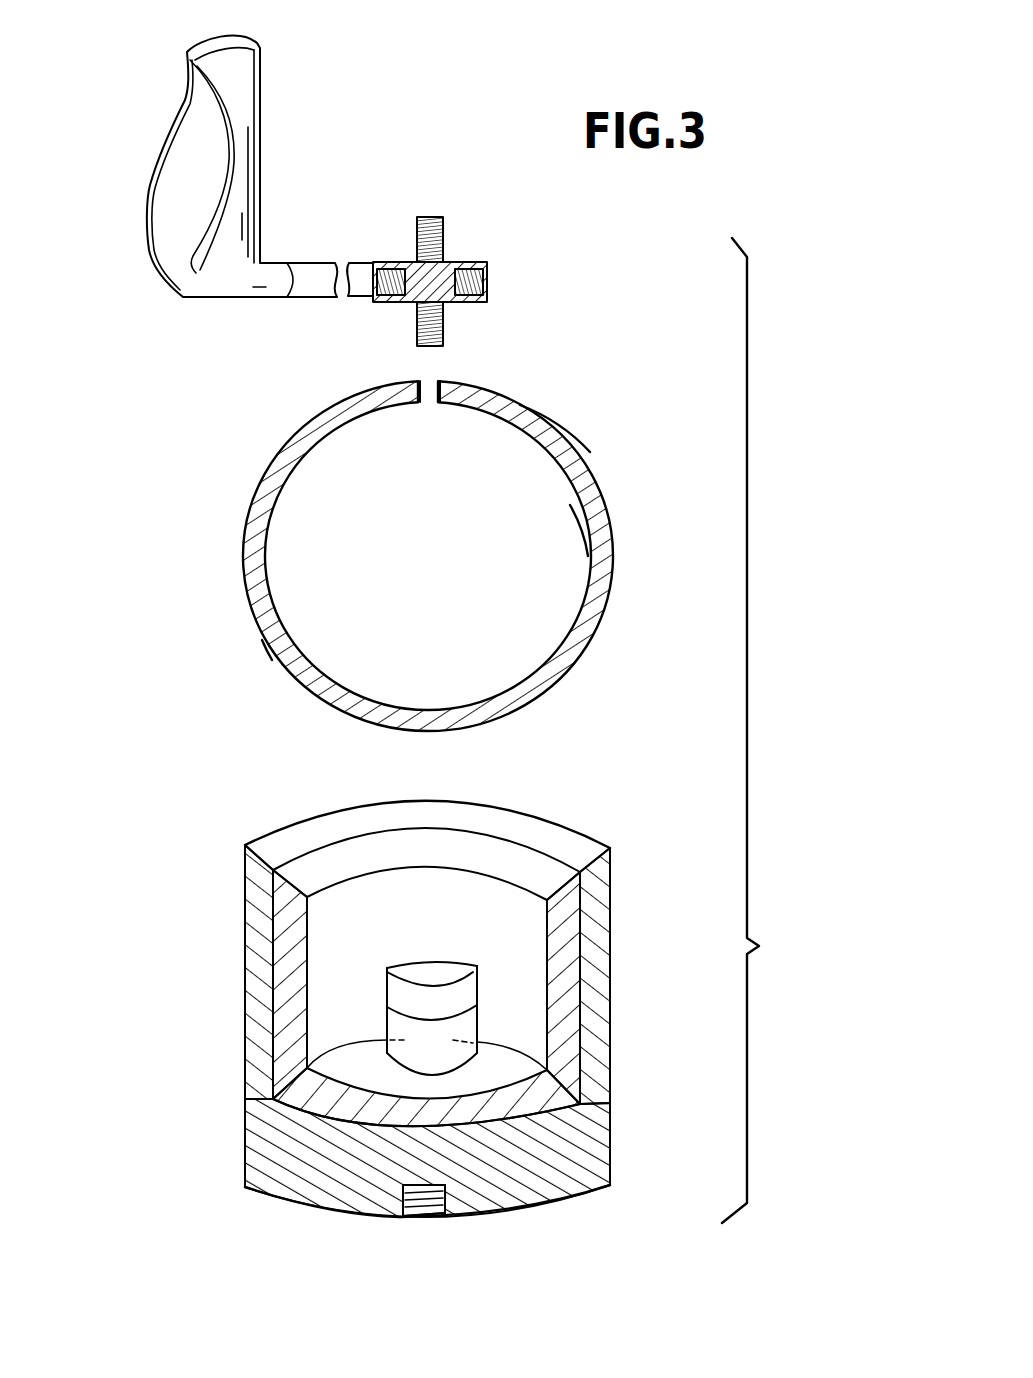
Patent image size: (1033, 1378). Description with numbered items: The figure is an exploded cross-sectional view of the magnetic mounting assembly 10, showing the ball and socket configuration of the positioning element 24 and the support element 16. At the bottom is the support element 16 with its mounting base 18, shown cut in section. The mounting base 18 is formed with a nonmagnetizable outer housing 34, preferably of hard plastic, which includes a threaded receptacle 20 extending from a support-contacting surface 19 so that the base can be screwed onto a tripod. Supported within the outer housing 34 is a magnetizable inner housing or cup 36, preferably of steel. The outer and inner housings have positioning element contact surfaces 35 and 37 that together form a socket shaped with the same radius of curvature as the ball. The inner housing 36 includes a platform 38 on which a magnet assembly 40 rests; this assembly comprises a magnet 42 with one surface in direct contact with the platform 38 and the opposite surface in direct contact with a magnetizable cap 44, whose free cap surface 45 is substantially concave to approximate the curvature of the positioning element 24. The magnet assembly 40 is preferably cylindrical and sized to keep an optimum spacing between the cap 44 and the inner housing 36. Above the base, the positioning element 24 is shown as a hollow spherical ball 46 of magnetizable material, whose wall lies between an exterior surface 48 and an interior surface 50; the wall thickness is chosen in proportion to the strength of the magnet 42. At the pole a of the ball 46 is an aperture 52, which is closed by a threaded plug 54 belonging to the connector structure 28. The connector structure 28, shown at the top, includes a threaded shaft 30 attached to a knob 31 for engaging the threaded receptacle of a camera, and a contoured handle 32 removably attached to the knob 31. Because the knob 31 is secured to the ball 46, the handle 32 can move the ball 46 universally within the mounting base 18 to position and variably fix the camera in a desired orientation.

The mounting assembly 10 is at (767, 730).
The support element 16 is at (381, 1039).
The mounting base 18 is at (575, 1200).
The support-contacting surface 19 is at (357, 1215).
The receptacle 20 is at (425, 1210).
The positioning element 24 is at (246, 549).
The connector structure 28 is at (348, 251).
The threaded shaft 30 is at (444, 242).
The knob 31 is at (487, 278).
The handle 32 is at (185, 100).
The outer housing 34 is at (265, 1123).
The positioning element contact surface 35 is at (300, 835).
The inner housing 36 is at (303, 1008).
The positioning element contacting surface 37 is at (307, 867).
The platform 38 is at (497, 1075).
The magnet assembly 40 is at (422, 987).
The magnet 42 is at (448, 1056).
The cap 44 is at (463, 992).
The cap surface 45 is at (430, 980).
The ball 46 is at (270, 648).
The exterior surface 48 is at (577, 453).
The interior surface 50 is at (572, 493).
The aperture 52 is at (437, 382).
The plug 54 is at (445, 322).
The pole a is at (431, 408).